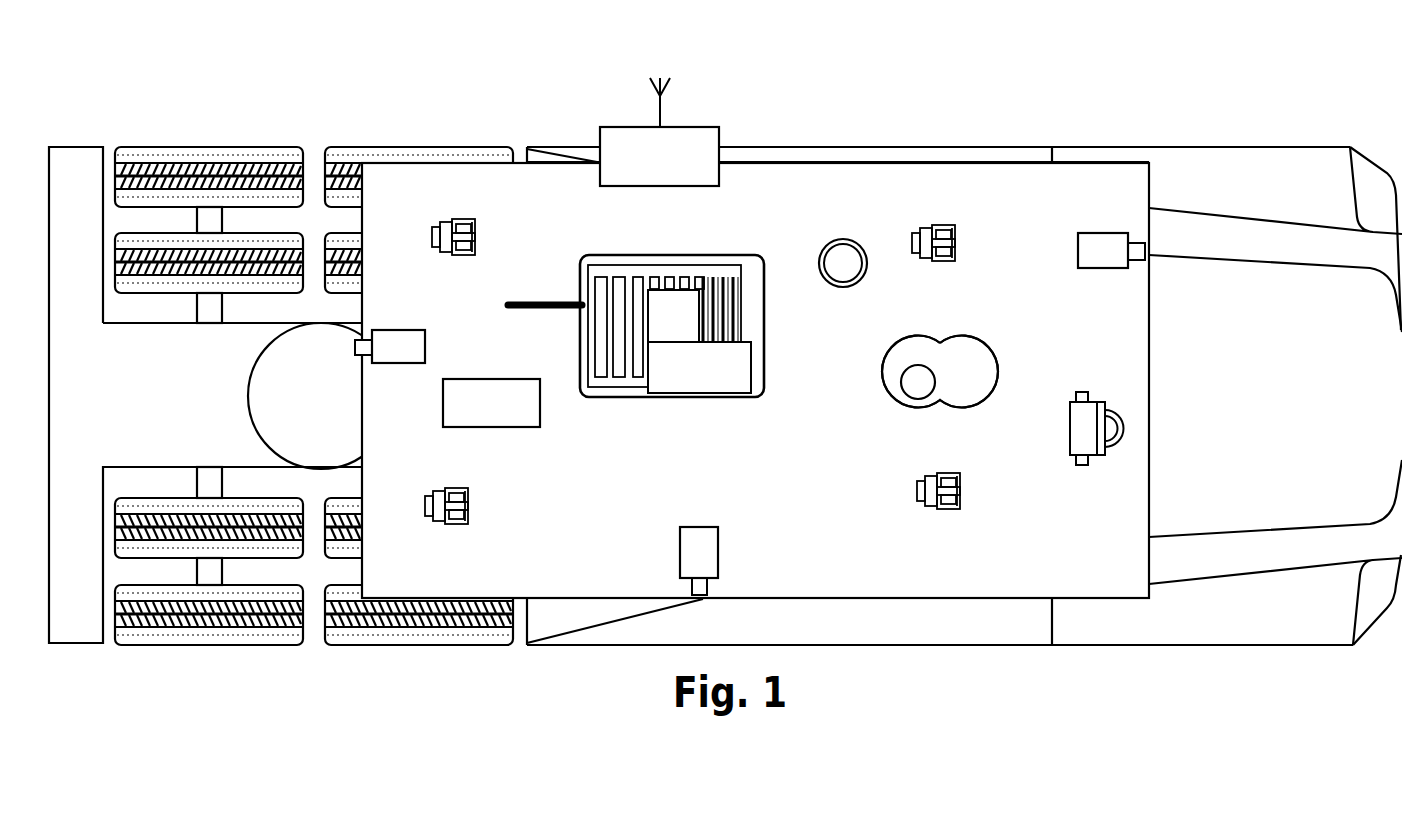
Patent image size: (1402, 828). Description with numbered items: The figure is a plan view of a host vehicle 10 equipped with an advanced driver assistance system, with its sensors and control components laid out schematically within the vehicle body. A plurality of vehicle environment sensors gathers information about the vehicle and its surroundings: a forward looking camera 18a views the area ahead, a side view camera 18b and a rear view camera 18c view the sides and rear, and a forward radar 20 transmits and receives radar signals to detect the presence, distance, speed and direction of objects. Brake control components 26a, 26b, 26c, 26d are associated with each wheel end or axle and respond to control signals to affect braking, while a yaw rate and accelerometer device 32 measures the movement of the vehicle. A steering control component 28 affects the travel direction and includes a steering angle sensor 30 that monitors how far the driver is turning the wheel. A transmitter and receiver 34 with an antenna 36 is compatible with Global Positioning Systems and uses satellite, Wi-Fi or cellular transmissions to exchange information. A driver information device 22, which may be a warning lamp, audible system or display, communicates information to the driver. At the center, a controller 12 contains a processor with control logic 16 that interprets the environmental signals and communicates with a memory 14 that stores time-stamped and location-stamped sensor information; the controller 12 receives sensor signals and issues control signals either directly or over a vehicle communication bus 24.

The host vehicle 10 is at (1040, 126).
The controller 12 is at (672, 294).
The memory 14 is at (687, 330).
The control logic 16 is at (685, 383).
The camera 18a is at (1078, 250).
The camera 18b is at (700, 527).
The camera 18c is at (425, 347).
The radar 20 is at (1098, 401).
The driver information device 22 is at (843, 239).
The vehicle communication bus 24 is at (548, 301).
The brake control component 26a is at (945, 224).
The brake control component 26b is at (961, 490).
The brake control component 26c is at (476, 237).
The brake control component 26d is at (470, 502).
The steering control component 28 is at (968, 337).
The steering angle sensor 30 is at (904, 385).
The yaw rate and accelerometer device 32 is at (443, 402).
The transmitter and receiver 34 is at (721, 140).
The antenna 36 is at (661, 108).